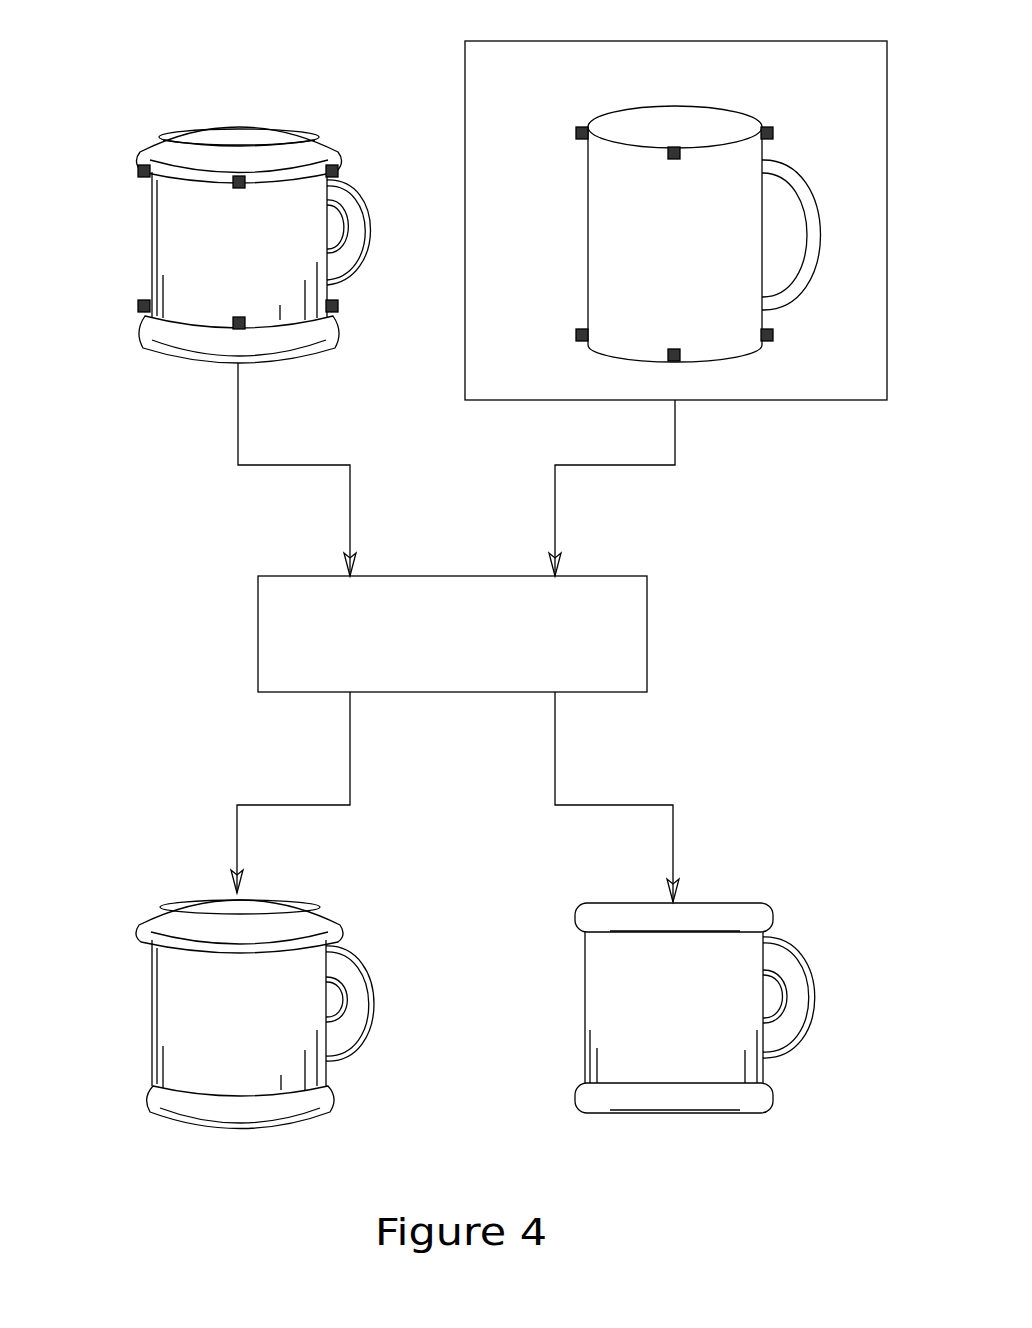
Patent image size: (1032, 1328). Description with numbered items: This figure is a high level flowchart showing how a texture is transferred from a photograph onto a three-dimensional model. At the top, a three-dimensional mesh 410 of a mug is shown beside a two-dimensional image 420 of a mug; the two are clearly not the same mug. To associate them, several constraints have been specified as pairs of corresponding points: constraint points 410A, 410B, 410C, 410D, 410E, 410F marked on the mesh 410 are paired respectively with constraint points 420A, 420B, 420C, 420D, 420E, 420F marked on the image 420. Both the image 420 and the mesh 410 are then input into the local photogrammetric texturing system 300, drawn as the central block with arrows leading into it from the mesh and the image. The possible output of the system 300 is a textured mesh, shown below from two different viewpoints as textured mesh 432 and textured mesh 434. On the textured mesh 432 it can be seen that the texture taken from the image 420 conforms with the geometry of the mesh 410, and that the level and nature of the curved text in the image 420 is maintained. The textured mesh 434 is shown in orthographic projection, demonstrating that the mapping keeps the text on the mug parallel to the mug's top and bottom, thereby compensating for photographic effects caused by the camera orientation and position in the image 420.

The 3D mesh 410 is at (310, 72).
The constraint point on mesh 410A is at (138, 308).
The constraint point on mesh 410B is at (232, 325).
The constraint point on mesh 410C is at (339, 306).
The constraint point on mesh 410D is at (339, 170).
The constraint point on mesh 410E is at (234, 180).
The constraint point on mesh 410F is at (138, 172).
The 2D image 420 is at (797, 41).
The constraint point on image 420A is at (576, 339).
The constraint point on image 420B is at (681, 358).
The constraint point on image 420C is at (774, 335).
The constraint point on image 420D is at (774, 133).
The constraint point on image 420E is at (672, 147).
The constraint point on image 420F is at (576, 135).
The system 300 is at (647, 628).
The textured mesh 432 is at (309, 875).
The textured mesh 434 is at (765, 875).